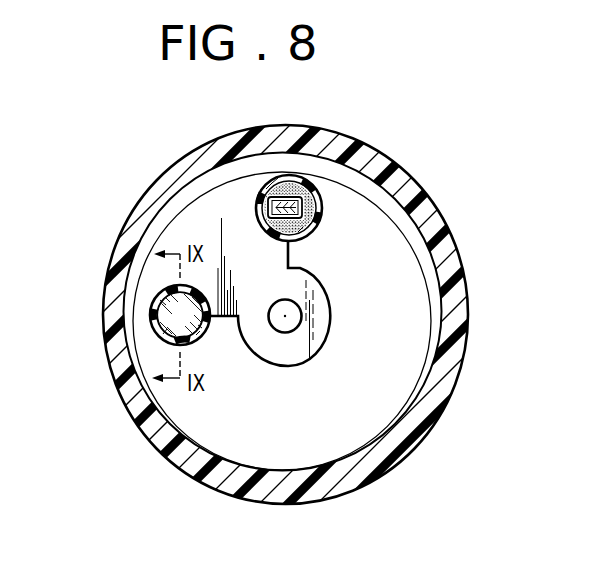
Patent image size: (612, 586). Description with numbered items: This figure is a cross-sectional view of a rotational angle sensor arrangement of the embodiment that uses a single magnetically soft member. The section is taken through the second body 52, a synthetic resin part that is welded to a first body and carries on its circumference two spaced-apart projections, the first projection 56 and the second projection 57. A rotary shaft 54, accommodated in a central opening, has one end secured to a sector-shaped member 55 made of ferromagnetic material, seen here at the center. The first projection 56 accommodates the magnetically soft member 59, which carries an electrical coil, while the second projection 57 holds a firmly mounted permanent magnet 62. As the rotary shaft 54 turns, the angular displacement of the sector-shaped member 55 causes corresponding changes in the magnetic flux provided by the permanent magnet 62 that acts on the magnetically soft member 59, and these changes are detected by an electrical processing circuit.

The second body 52 is at (455, 366).
The rotary shaft 54 is at (302, 316).
The sector-shaped member 55 is at (277, 253).
The first projection 56 is at (323, 213).
The second projection 57 is at (148, 334).
The magnetically soft member 59 is at (312, 198).
The permanent magnet 62 is at (152, 305).